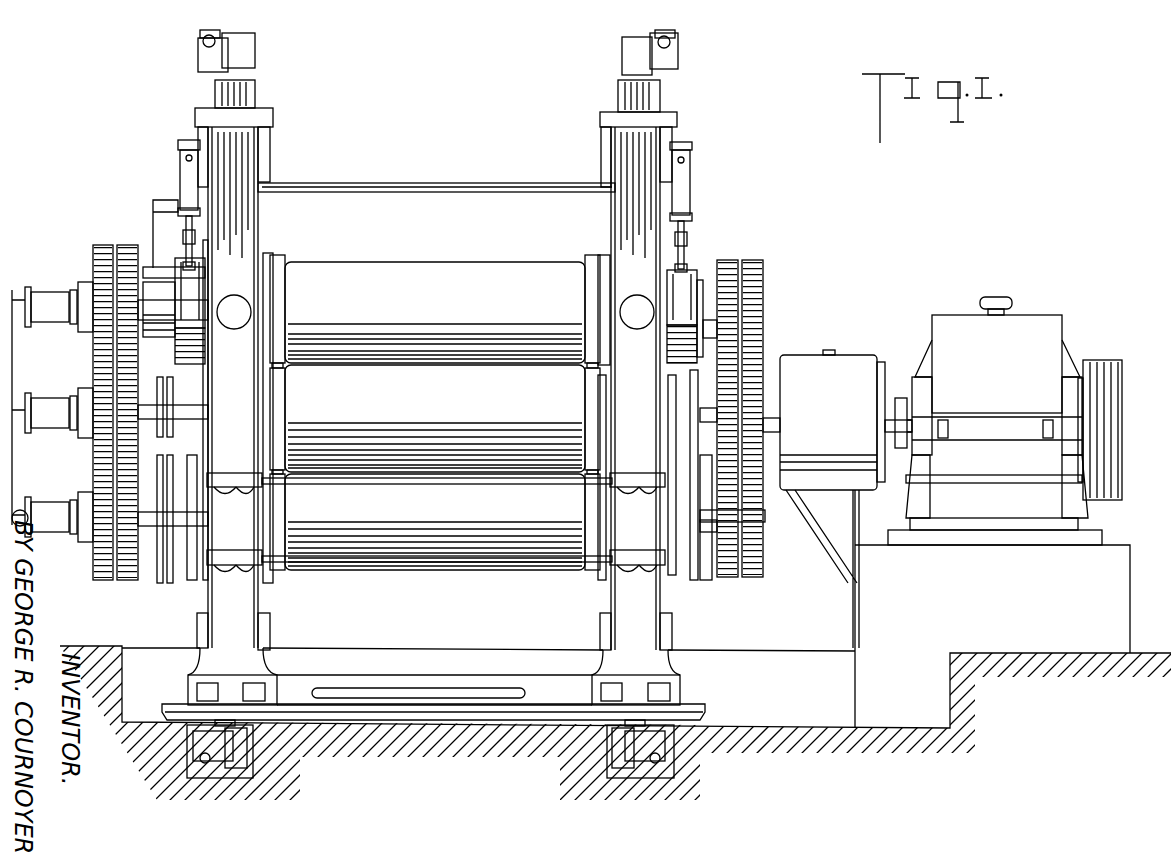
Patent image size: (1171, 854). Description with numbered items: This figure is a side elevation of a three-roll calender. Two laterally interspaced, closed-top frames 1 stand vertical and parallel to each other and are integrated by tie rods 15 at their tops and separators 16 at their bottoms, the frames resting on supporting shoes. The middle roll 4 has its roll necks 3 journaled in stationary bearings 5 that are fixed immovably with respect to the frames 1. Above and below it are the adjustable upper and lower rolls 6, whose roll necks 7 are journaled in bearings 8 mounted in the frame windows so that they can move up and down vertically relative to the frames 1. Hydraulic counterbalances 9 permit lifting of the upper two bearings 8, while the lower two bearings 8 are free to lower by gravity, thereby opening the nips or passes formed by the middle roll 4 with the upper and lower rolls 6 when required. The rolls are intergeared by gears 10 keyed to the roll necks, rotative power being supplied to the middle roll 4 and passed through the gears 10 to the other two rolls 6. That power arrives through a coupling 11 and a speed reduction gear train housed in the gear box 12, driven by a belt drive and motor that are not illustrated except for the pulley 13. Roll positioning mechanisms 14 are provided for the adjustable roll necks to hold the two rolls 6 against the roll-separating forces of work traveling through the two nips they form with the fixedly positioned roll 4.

The frame 1 is at (240, 162).
The roll neck 3 is at (283, 412).
The middle roll 4 is at (454, 406).
The stationary bearing 5 is at (272, 392).
The upper and lower rolls 6 is at (452, 306).
The roll neck 7 is at (288, 296).
The bearing 8 is at (263, 264).
The hydraulic counterbalance 9 is at (180, 183).
The gear 10 is at (100, 338).
The coupling 11 is at (858, 352).
The gear box 12 is at (1030, 323).
The pulley 13 is at (1108, 380).
The roll positioning mechanism 14 is at (262, 80).
The tie rod 15 is at (366, 190).
The separator 16 is at (412, 680).